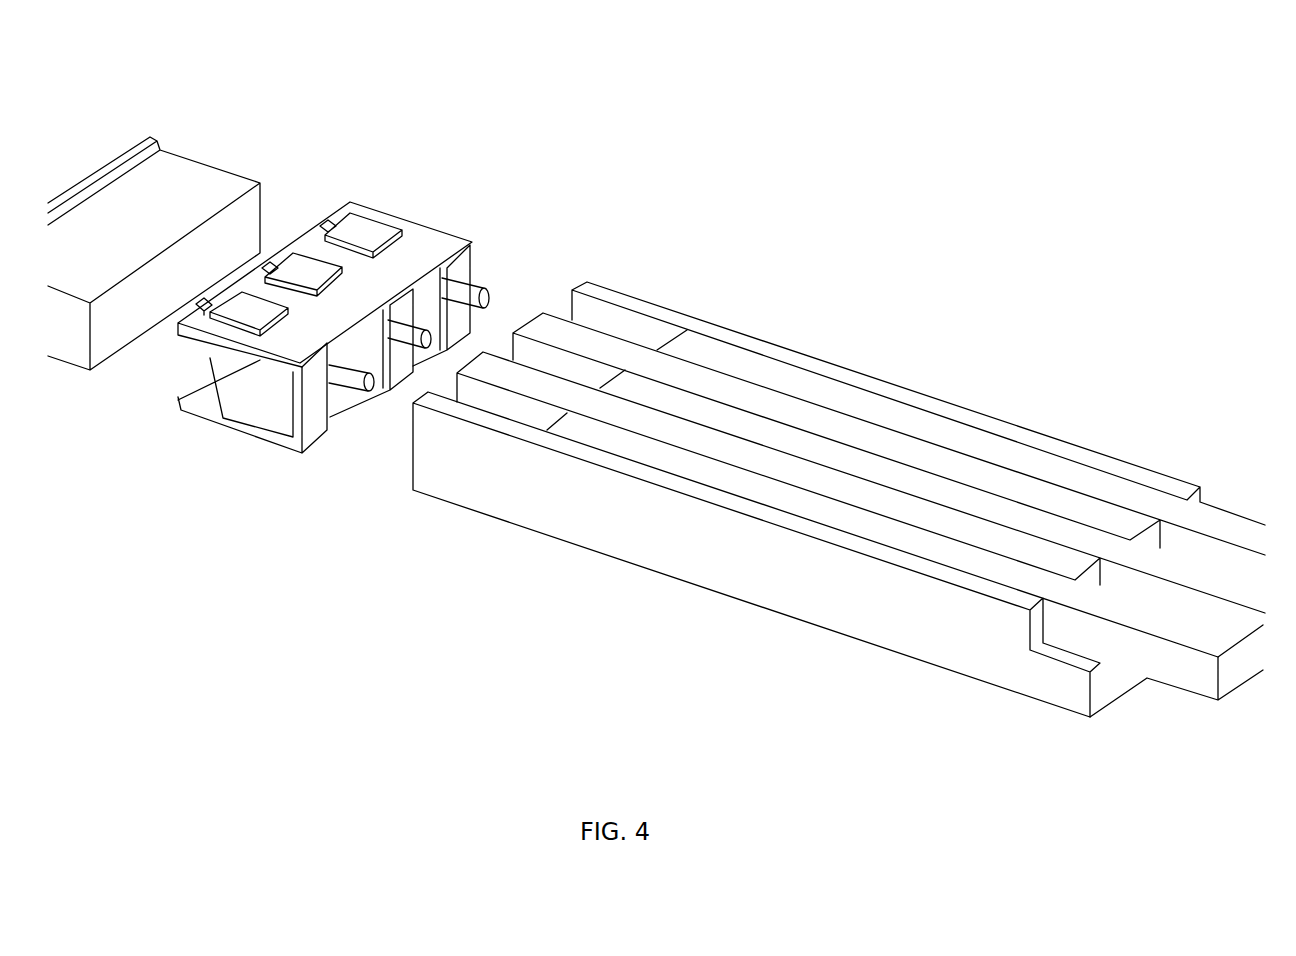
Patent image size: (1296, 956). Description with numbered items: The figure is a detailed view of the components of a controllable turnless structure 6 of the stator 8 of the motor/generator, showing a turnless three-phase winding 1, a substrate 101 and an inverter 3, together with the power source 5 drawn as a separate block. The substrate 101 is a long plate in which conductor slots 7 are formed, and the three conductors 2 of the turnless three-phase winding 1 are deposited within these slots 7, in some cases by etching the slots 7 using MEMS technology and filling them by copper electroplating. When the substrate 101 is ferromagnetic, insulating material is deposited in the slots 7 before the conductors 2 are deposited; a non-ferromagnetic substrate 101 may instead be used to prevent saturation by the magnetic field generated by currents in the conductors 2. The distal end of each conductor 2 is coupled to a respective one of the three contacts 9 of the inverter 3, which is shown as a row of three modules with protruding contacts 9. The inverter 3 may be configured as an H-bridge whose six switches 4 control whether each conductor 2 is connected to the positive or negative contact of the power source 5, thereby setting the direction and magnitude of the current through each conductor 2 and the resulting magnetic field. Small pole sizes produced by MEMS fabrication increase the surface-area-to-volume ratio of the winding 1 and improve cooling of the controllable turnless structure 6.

The turnless three-phase winding 1 is at (839, 475).
The conductors 2 is at (723, 350).
The inverter 3 is at (289, 342).
The switches 4 is at (373, 237).
The power source 5 is at (178, 108).
The controllable turnless structure 6 is at (700, 625).
The conductor slots 7 is at (580, 307).
The stator 8 is at (855, 370).
The contacts 9 is at (473, 275).
The substrate 101 is at (915, 618).